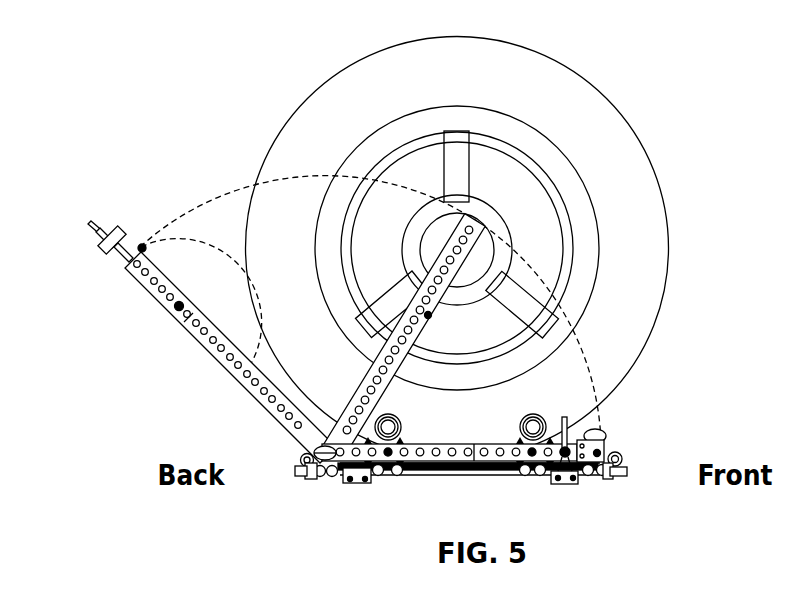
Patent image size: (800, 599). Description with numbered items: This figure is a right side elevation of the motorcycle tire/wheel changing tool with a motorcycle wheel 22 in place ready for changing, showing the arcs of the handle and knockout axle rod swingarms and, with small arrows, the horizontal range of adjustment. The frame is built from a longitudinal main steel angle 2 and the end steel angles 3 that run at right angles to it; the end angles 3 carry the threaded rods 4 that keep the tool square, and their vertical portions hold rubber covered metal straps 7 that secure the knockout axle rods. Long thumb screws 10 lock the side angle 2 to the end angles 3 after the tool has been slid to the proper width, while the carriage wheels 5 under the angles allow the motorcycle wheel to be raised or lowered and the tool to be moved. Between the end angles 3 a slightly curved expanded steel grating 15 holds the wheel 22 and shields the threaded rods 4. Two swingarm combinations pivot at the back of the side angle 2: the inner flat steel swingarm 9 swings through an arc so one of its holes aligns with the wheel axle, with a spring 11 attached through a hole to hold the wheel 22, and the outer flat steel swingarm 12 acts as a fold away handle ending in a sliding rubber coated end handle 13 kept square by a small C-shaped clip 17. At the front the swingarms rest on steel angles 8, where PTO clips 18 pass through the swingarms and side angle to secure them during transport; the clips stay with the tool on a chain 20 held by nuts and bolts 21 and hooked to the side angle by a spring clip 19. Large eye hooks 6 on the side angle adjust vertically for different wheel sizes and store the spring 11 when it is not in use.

The main steel angle 2 is at (449, 444).
The end steel angle 3 is at (310, 478).
The threaded rod 4 is at (296, 470).
The carriage wheel 5 is at (355, 484).
The eye hook 6 is at (400, 425).
The metal strap with rubber covering 7 is at (302, 457).
The steel angle 8 is at (583, 436).
The inner flat steel swingarm 9 is at (360, 384).
The long thumb screw 10 is at (323, 437).
The spring 11 is at (430, 316).
The flat steel swingarm 12 is at (164, 278).
The end handle 13 is at (90, 221).
The expanded steel grating 15 is at (492, 437).
The C-shaped clip 17 is at (144, 246).
The PTO clip 18 is at (563, 428).
The spring clip 19 is at (560, 479).
The chain 20 is at (455, 471).
The nuts and bolts 21 is at (413, 472).
The wheel 22 is at (583, 92).